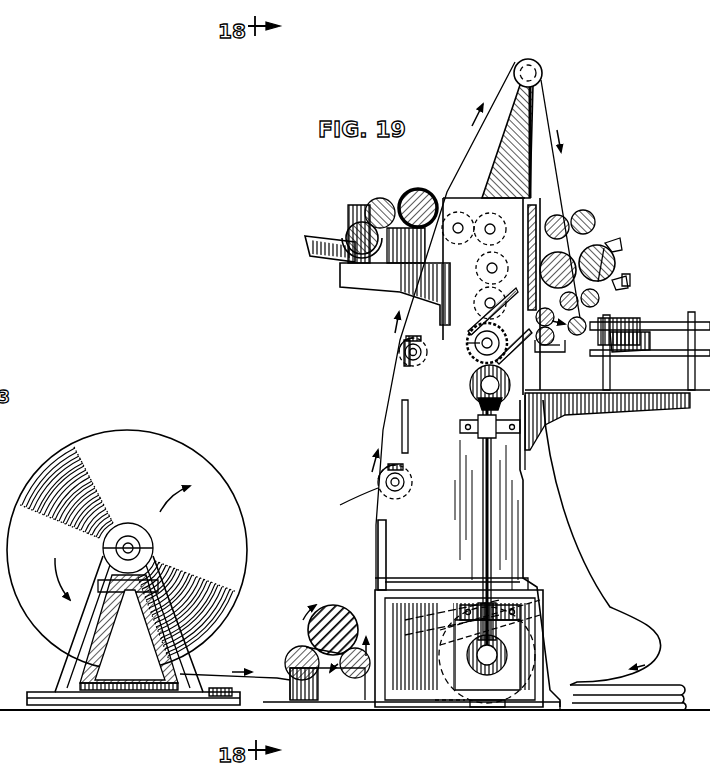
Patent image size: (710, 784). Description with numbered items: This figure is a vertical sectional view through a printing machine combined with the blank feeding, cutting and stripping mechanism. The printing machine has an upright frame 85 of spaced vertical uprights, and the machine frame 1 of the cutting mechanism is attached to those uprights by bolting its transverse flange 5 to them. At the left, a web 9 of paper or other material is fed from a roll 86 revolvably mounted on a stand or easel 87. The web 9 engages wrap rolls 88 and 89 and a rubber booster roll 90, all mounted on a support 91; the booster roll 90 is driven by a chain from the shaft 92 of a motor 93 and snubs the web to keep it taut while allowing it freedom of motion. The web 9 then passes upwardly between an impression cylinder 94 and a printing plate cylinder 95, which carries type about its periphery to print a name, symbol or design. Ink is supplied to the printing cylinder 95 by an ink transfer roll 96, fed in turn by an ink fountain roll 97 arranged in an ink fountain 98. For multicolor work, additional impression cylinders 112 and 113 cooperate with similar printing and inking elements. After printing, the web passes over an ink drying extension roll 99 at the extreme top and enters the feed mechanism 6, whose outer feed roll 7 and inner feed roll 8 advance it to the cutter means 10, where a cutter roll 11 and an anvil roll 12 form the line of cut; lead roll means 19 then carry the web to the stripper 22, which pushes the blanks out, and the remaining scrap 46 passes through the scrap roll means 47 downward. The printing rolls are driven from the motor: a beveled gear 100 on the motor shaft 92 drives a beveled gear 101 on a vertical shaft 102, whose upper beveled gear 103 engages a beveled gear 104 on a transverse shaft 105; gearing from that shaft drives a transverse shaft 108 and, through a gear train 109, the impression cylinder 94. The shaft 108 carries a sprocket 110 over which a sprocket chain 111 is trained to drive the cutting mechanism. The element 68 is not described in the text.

The machine frame 1 is at (570, 420).
The side flanges or extensions 5 is at (533, 205).
The feed mechanism 6 is at (580, 206).
The front feed roll 7 is at (590, 212).
The rear feed roll 8 is at (556, 214).
The web of material 9 is at (268, 674).
The cutter means 10 is at (592, 250).
The front cutter roll 11 is at (615, 262).
The rear anvil roll or platen 12 is at (560, 256).
The lead roll means 19 is at (559, 302).
The stripper, knock-out roller or member 22 is at (577, 338).
The scrap 46 is at (578, 568).
The scrap roll means 47 is at (500, 326).
The adjusting screw 68 is at (615, 282).
The upright frame 85 is at (377, 530).
The roll 86 is at (187, 452).
The stand, easel or support 87 is at (60, 678).
The wrap roll 88 is at (297, 655).
The wrap roll 89 is at (353, 680).
The booster roll 90 is at (330, 606).
The support 91 is at (322, 690).
The motor shaft 92 is at (487, 664).
The motor 93 is at (500, 704).
The impression cylinder or roll 94 is at (452, 197).
The printing plate cylinder 95 is at (418, 190).
The ink transfer roll 96 is at (380, 198).
The ink fountain roll 97 is at (350, 230).
The ink fountain 98 is at (322, 252).
The ink drying extension roll 99 is at (540, 68).
The beveled gear 100 is at (495, 654).
The beveled gear 101 is at (517, 624).
The vertical shaft 102 is at (482, 538).
The beveled gear 103 is at (475, 404).
The beveled gear 104 is at (470, 388).
The transverse shaft 105 is at (507, 385).
The transverse shaft 108 is at (486, 352).
The gear train 109 is at (430, 290).
The sprocket 110 is at (478, 350).
The sprocket chain 111 is at (555, 356).
The additional impression cylinder 112 is at (378, 492).
The additional impression cylinder 113 is at (399, 349).